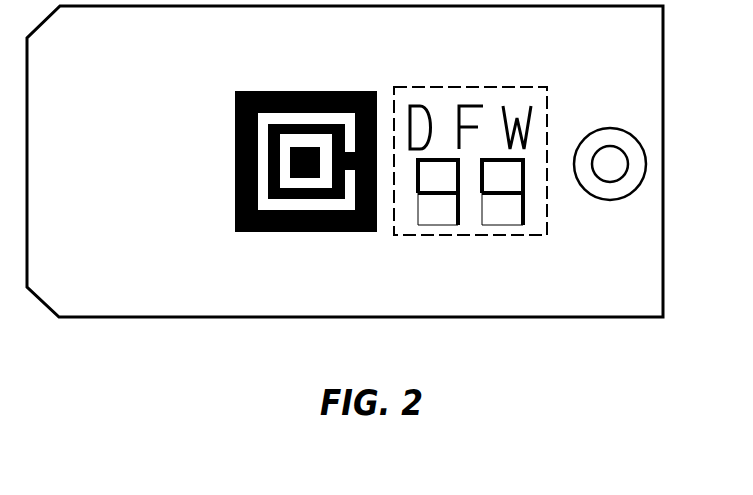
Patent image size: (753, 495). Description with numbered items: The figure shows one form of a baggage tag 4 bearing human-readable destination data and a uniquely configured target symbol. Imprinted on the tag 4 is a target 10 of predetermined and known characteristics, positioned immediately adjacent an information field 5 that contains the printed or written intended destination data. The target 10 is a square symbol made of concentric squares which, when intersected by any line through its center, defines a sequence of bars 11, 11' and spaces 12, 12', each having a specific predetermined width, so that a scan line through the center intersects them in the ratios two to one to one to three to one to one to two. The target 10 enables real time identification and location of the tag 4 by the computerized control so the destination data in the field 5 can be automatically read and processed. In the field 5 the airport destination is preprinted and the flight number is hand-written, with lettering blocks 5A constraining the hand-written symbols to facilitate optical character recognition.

The tag 4 is at (648, 92).
The information field 5 is at (452, 90).
The lettering blocks 5A is at (441, 225).
The target 10 is at (248, 74).
The bar 11 is at (272, 161).
The bar 11' is at (284, 160).
The space 12 is at (306, 195).
The space 12' is at (306, 197).